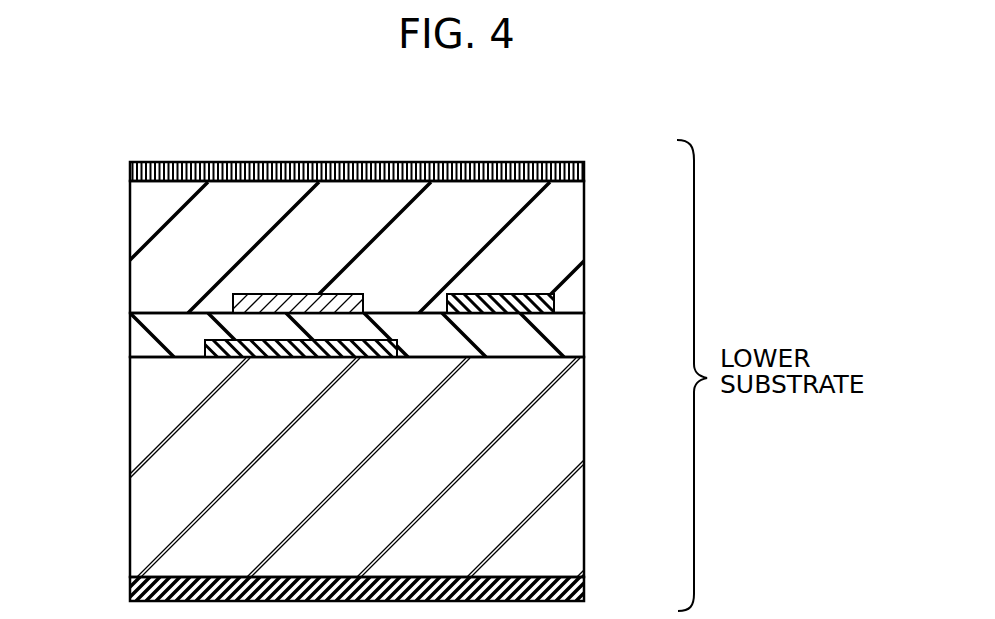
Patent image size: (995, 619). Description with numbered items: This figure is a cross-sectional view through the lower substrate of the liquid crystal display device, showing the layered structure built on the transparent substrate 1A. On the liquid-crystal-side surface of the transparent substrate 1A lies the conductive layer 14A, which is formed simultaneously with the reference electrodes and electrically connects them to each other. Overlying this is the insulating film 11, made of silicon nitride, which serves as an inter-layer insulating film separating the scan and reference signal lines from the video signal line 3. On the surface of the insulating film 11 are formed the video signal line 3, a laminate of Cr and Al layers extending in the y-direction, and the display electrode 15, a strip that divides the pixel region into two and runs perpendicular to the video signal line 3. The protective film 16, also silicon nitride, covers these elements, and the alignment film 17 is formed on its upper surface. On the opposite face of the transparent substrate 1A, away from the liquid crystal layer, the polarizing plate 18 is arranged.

The alignment film 17 is at (557, 178).
The protective film 16 is at (577, 301).
The display electrode 15 is at (286, 296).
The video signal line 3 is at (484, 293).
The insulating film 11 is at (577, 346).
The conductive layer 14A is at (205, 348).
The transparent substrate 1A is at (577, 497).
The polarizing plate 18 is at (585, 582).